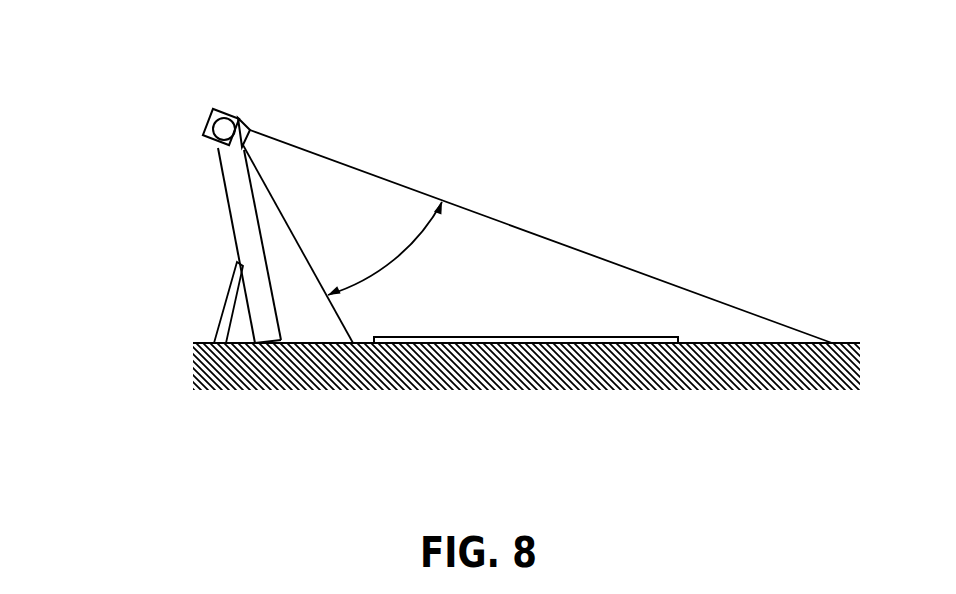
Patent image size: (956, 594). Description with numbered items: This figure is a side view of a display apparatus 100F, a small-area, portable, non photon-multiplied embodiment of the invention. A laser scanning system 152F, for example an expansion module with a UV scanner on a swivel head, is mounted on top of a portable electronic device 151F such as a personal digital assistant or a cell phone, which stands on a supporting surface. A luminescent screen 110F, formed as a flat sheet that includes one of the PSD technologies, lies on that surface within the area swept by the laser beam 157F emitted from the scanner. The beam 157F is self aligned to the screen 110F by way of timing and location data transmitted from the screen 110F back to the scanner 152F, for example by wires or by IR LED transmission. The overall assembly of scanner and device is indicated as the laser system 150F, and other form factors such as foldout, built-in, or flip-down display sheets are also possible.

The display apparatus 100F is at (669, 70).
The luminescent screen 110F is at (460, 333).
The light fixture assembly 150F is at (179, 109).
The portable electronic device 151F is at (233, 195).
The laser scanning system 152F is at (250, 130).
The laser beam 157F is at (402, 252).